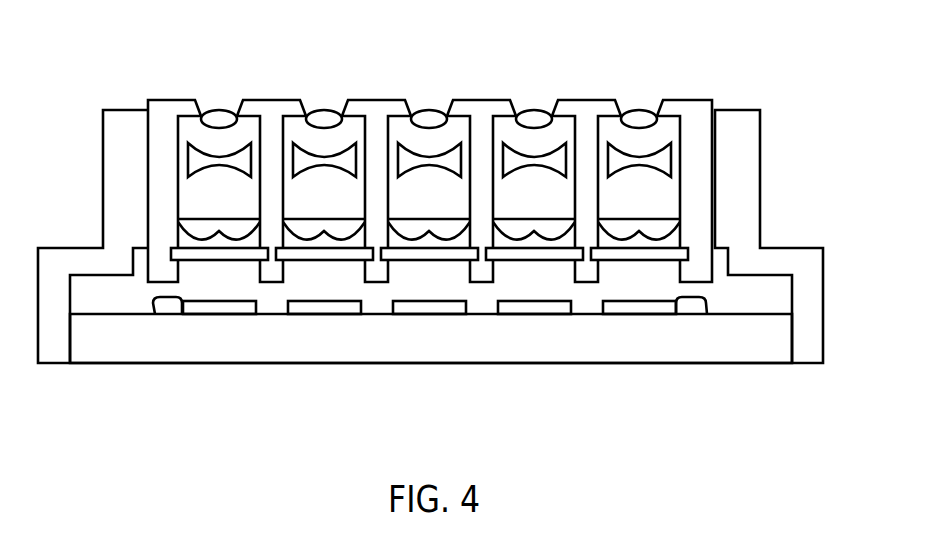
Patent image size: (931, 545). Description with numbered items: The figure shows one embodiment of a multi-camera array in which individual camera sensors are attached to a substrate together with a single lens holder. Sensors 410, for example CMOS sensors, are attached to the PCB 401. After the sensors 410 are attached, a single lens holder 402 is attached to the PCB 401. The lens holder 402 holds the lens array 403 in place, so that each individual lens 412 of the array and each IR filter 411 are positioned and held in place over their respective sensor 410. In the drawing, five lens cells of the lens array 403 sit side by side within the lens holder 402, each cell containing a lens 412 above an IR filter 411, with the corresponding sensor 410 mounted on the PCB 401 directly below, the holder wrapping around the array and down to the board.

The PCB 401 is at (103, 347).
The single lens holder 402 is at (737, 163).
The lens array 403 is at (696, 85).
The sensor 410 is at (233, 307).
The IR filter 411 is at (197, 252).
The lens 412 is at (219, 179).